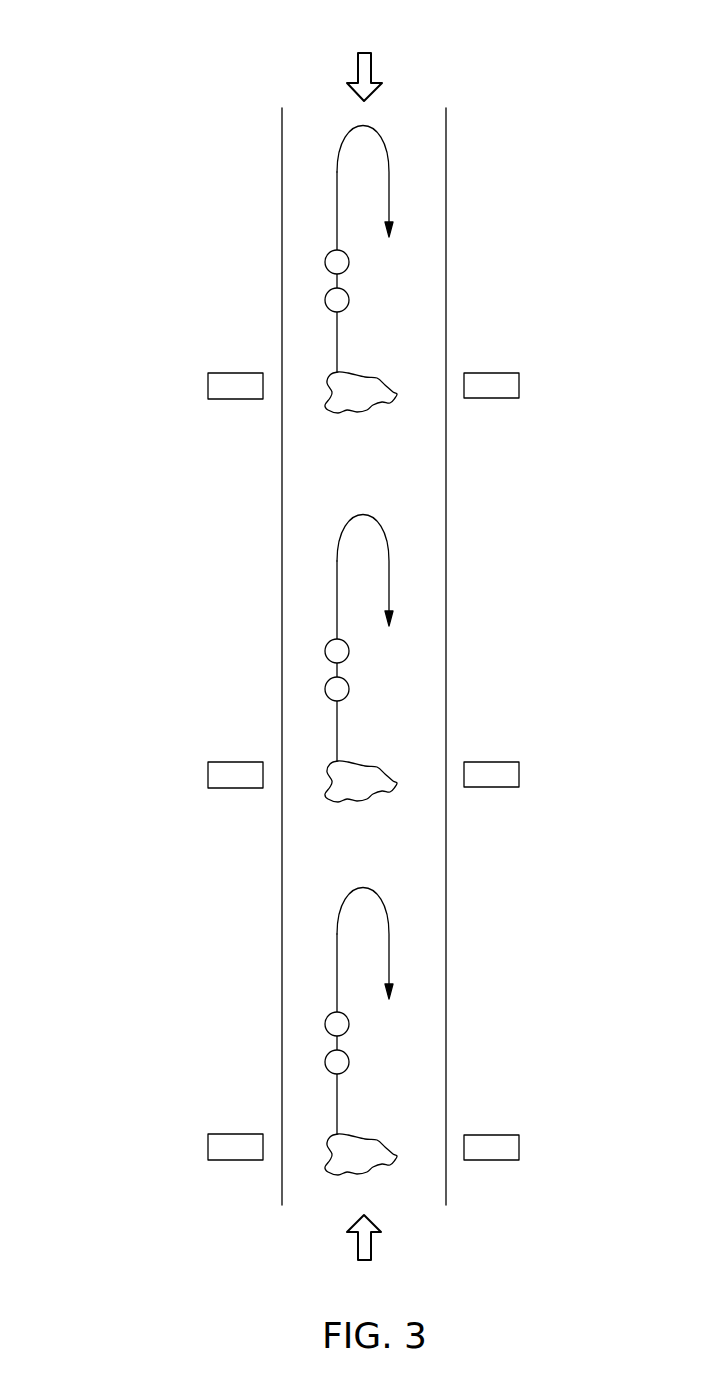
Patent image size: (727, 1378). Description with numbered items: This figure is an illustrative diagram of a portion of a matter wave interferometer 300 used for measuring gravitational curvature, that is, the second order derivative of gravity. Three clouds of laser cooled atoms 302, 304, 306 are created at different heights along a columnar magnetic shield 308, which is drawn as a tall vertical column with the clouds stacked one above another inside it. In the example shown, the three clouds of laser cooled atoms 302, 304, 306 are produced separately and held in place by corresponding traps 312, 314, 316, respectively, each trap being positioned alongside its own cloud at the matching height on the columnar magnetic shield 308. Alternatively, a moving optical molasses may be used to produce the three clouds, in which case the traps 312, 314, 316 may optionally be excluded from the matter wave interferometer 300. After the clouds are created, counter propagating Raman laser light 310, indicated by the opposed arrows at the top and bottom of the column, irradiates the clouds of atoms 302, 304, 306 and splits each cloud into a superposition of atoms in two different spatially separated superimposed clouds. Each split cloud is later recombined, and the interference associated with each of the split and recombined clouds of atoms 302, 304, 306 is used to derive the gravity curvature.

The matter wave interferometer 300 is at (136, 43).
The cloud of laser cooled atoms 302 is at (421, 1129).
The cloud of laser cooled atoms 304 is at (421, 756).
The cloud of laser cooled atoms 306 is at (421, 367).
The columnar magnetic shield 308 is at (282, 496).
The counter propagating Raman laser light 310 is at (357, 64).
The trap 312 is at (542, 1143).
The trap 314 is at (542, 770).
The trap 316 is at (542, 381).